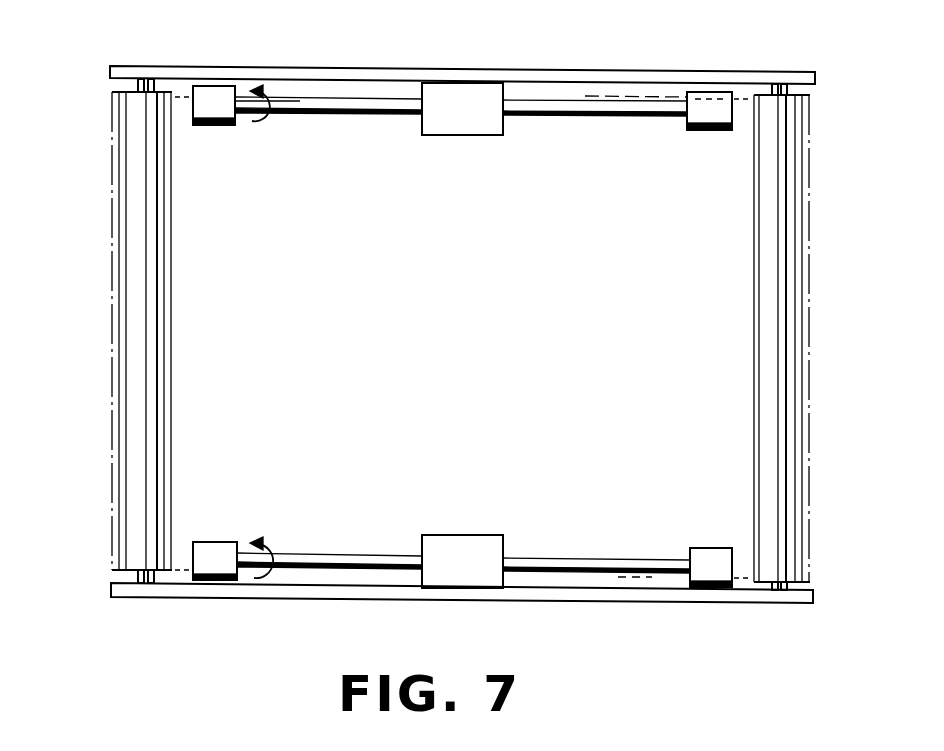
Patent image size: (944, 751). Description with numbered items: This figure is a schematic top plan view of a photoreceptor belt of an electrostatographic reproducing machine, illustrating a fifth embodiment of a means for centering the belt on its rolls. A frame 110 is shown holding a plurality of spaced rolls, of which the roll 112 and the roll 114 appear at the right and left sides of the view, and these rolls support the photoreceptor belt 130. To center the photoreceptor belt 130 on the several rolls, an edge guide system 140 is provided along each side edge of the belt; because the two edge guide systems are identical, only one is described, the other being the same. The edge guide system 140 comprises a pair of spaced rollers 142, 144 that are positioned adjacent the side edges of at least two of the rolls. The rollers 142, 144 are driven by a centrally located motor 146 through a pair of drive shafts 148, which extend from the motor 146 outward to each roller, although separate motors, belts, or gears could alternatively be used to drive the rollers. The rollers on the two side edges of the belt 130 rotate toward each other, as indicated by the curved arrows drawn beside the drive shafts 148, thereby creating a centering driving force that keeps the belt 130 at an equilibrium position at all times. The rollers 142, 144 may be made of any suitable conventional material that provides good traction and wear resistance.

The frame 110 is at (313, 77).
The roll 112 is at (782, 375).
The roll 114 is at (136, 349).
The photoreceptor belt 130 is at (745, 563).
The edge guide system 140 is at (461, 151).
The roller 142 is at (705, 118).
The roller 144 is at (207, 125).
The motor 146 is at (433, 117).
The drive shafts 148 is at (572, 112).